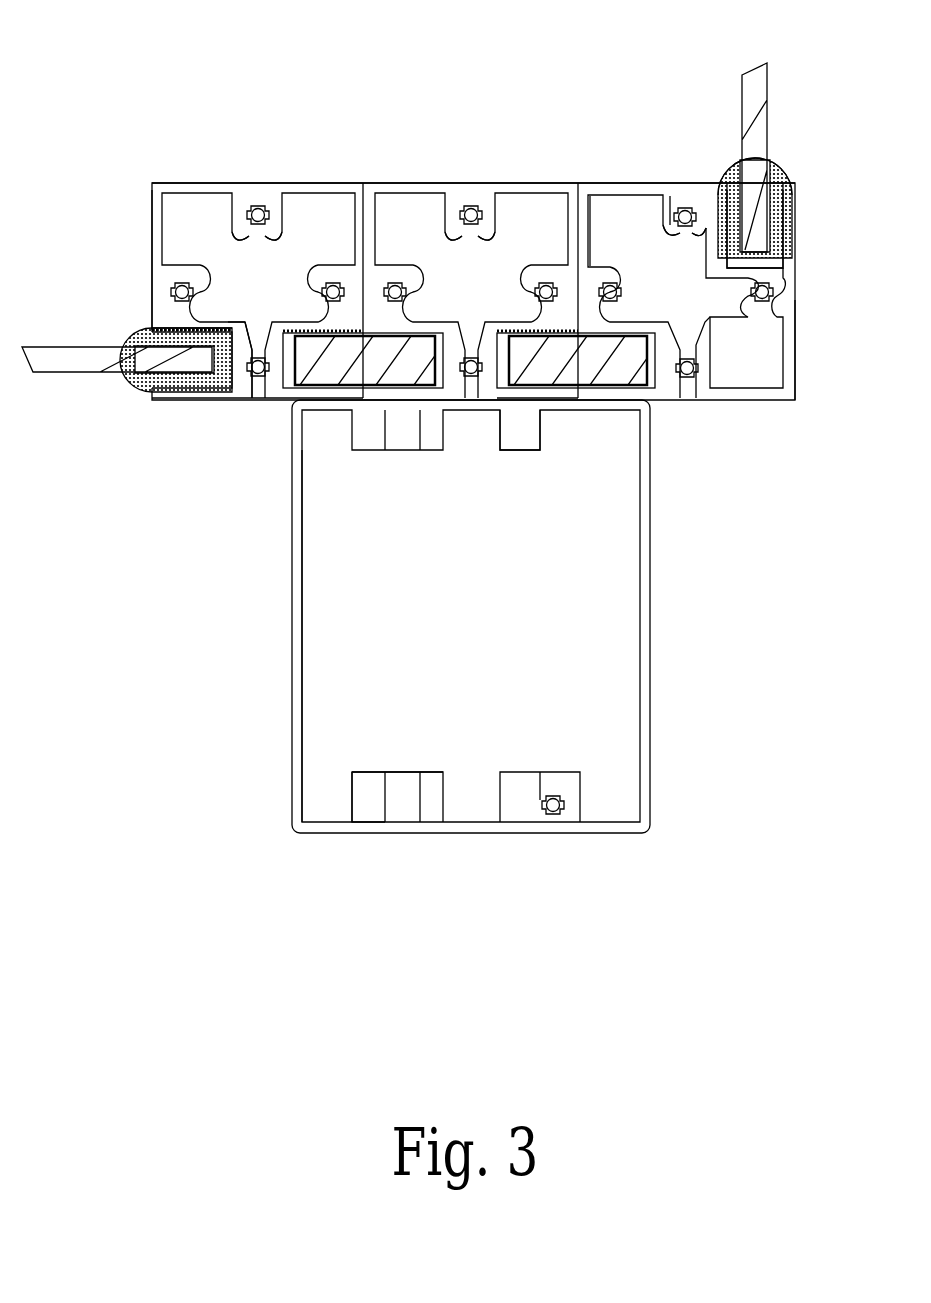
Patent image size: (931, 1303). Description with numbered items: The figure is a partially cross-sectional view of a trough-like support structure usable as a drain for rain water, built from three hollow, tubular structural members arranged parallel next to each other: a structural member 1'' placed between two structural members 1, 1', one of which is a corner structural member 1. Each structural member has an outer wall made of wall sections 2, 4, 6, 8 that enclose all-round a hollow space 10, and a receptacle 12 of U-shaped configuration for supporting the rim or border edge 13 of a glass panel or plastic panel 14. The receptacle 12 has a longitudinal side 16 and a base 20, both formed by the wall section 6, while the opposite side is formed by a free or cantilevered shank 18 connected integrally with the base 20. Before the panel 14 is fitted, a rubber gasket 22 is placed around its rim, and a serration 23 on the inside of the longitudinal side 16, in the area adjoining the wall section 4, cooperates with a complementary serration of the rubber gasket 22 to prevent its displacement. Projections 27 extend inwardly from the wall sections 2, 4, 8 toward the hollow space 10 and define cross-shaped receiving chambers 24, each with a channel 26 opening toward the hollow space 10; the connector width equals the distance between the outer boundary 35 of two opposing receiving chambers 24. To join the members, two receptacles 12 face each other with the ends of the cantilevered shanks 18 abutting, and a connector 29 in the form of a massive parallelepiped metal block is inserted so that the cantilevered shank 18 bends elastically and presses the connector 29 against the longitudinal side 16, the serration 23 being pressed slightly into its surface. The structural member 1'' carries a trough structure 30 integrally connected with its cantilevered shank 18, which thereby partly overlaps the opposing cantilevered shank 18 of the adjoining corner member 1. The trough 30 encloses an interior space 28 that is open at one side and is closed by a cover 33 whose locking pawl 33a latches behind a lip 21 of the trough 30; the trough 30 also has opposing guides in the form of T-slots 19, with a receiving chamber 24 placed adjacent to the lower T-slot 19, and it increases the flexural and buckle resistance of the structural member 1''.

The structural member 1 is at (257, 101).
The structural member 1' is at (686, 135).
The structural member 1'' is at (470, 101).
The wall section 2 is at (190, 190).
The wall section 4 is at (155, 235).
The wall section 6 is at (670, 197).
The wall section 8 is at (588, 240).
The hollow space 10 is at (256, 291).
The receptacle 12 is at (786, 223).
The rim or border edge 13 is at (172, 392).
The glass panel or plastic panel 14 is at (68, 365).
The longitudinal side 16 is at (228, 325).
The cantilevered shank 18 is at (215, 398).
The T-slot 19 is at (522, 450).
The base 20 is at (238, 372).
The lip 21 is at (372, 812).
The rubber gasket 22 is at (140, 393).
The serration 23 is at (160, 335).
The receiving chamber 24 is at (257, 208).
The channel 26 is at (253, 232).
The projection 27 is at (268, 228).
The hollow chamber 28 is at (446, 614).
The connector 29 is at (473, 360).
The trough structure 30 is at (648, 560).
The cover 33 is at (303, 620).
The locking pawl 33a is at (378, 785).
The outer boundary 35 is at (685, 205).